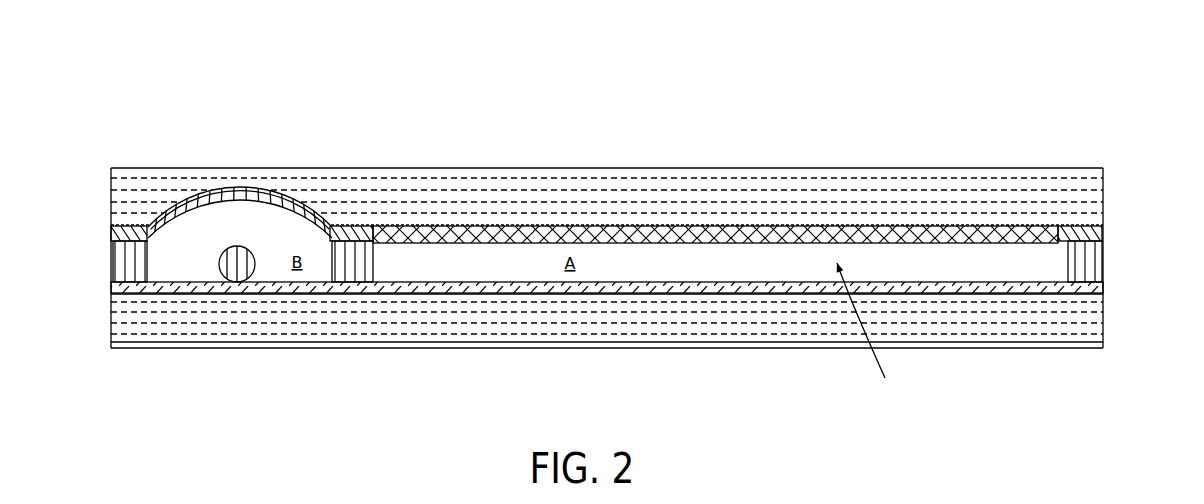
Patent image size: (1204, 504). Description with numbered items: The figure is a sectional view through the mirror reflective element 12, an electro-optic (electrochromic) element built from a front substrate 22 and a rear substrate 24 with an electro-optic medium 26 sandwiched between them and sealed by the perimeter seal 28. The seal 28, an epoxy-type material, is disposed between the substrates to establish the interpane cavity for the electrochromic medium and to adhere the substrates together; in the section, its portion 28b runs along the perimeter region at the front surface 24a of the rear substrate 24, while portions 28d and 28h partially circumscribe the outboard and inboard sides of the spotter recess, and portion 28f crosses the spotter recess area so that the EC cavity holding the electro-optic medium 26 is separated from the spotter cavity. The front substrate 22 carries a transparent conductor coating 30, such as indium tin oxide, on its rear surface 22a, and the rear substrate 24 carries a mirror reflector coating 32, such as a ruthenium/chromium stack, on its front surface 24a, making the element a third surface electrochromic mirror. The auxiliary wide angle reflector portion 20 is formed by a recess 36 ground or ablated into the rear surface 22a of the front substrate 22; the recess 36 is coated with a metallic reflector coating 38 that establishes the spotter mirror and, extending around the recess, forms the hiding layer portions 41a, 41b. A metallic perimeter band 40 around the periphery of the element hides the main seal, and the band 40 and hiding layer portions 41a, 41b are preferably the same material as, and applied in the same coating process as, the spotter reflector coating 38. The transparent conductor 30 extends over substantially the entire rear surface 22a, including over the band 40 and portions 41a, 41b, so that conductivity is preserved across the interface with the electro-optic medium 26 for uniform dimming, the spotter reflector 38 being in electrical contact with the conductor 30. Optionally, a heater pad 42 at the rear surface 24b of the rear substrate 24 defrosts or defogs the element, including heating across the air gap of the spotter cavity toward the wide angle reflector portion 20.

The mirror reflective element 12 is at (453, 88).
The auxiliary wide angle reflector portion 20 is at (240, 168).
The front substrate 22 is at (702, 195).
The rear surface of front substrate 22a is at (465, 223).
The rear substrate 24 is at (632, 320).
The front surface of rear substrate 24a is at (783, 295).
The rear surface of rear substrate 24b is at (990, 343).
The electro-optic medium 26 is at (866, 335).
The perimeter seal 28 is at (1100, 251).
The seal portion along perimeter region 28b is at (1087, 267).
The seal portion around outboard portion of recess 28d is at (132, 262).
The seal portion across spotter recess area 28f is at (233, 262).
The seal portion along inboard portion of recess 28h is at (355, 265).
The transparent conductor coating 30 is at (905, 227).
The mirror reflector coating 32 is at (467, 288).
The recess 36 is at (259, 187).
The metallic reflector coating 38 is at (196, 200).
The metallic perimeter band 40 is at (1088, 225).
The hiding layer portion 41a is at (353, 226).
The hiding layer portion 41b is at (130, 226).
The heater pad 42 is at (500, 348).